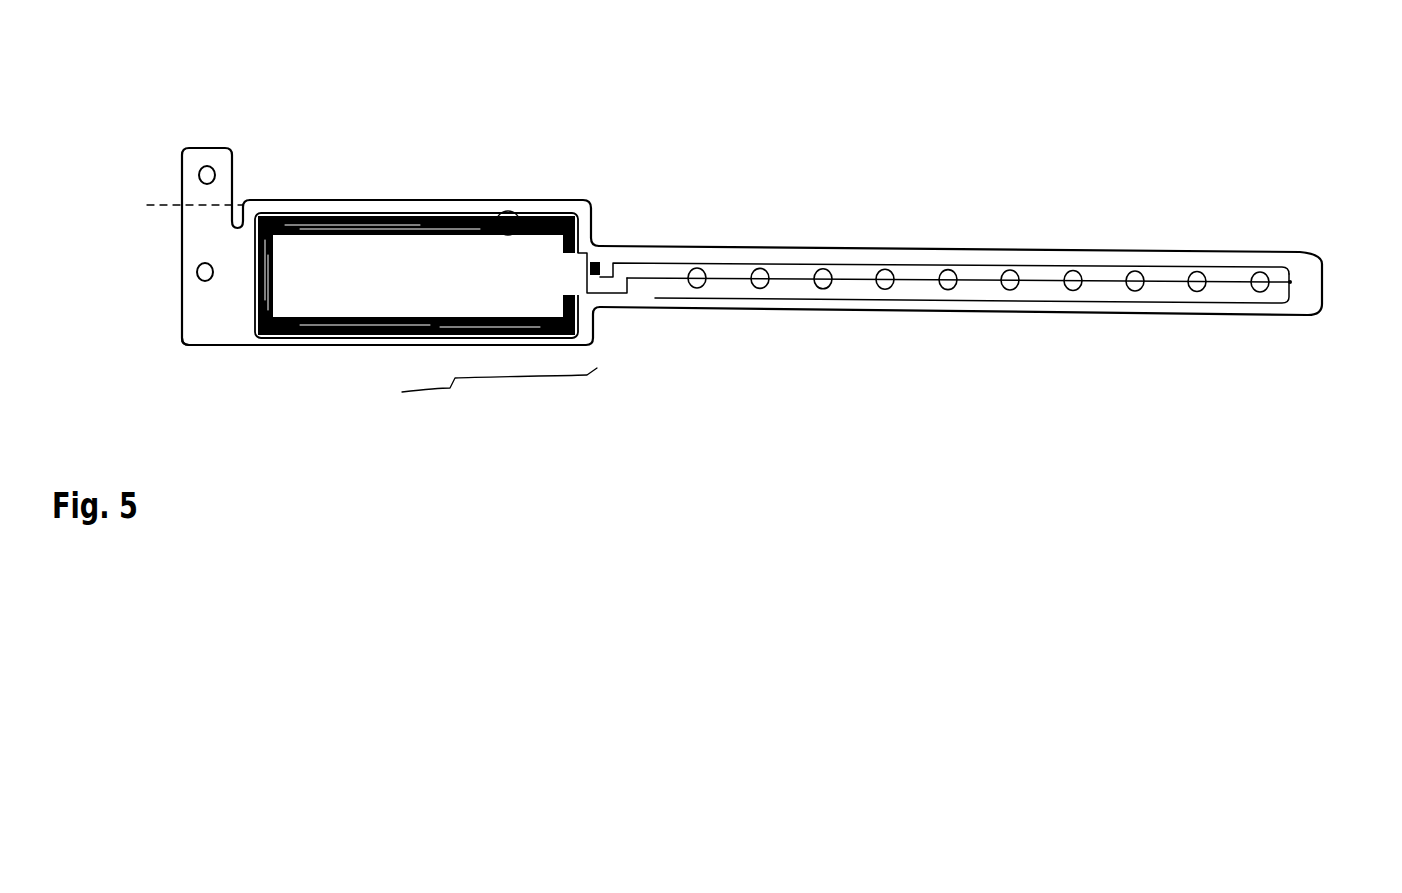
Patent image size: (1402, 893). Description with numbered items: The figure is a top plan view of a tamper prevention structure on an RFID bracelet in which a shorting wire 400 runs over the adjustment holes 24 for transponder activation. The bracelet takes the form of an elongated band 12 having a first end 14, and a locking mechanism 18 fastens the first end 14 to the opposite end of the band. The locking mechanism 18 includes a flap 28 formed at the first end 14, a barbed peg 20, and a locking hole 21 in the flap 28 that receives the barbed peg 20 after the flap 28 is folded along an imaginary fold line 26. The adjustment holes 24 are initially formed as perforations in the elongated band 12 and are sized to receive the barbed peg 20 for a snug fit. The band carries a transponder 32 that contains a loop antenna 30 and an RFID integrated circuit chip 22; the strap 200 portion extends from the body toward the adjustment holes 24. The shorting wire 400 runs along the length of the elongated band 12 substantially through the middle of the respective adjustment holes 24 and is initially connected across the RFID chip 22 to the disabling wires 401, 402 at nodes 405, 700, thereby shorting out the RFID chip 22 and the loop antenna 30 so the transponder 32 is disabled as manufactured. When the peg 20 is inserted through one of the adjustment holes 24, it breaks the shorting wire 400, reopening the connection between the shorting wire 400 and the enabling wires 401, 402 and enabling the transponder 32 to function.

The elongated band 12 is at (620, 225).
The first end 14 is at (189, 170).
The locking mechanism 18 is at (736, 269).
The barbed peg 20 is at (197, 266).
The locking hole 21 is at (206, 165).
The RFID integrated circuit chip 22 is at (590, 268).
The adjustment holes 24 is at (1142, 232).
The fold line 26 is at (182, 202).
The flap 28 is at (200, 347).
The loop antenna 30 is at (426, 282).
The transponder 32 is at (499, 397).
The strap 200 is at (990, 248).
The shorting wire 400 is at (652, 277).
The disabling wire 401 is at (765, 267).
The disabling wire 402 is at (712, 298).
The node 405 is at (593, 248).
The node 700 is at (1290, 282).